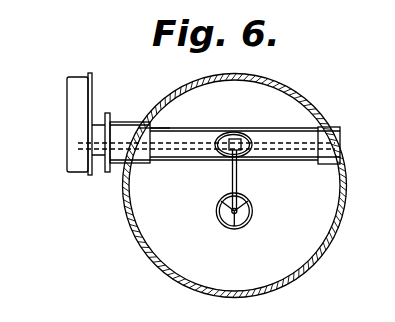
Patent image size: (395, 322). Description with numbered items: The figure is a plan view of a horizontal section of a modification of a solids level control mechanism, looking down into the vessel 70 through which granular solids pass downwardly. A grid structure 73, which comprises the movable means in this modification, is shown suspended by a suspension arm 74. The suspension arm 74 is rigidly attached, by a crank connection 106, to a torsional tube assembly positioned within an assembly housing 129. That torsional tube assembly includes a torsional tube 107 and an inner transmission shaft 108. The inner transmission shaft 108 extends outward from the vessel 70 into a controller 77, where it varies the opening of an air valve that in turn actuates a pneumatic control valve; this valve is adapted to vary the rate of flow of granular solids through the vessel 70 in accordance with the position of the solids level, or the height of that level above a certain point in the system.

The vessel 70 is at (311, 102).
The controller 77 is at (72, 80).
The torsional tube 107 is at (167, 161).
The inner transmission shaft 108 is at (193, 149).
The assembly housing 129 is at (159, 126).
The crank connection 106 is at (235, 140).
The suspension arm 74 is at (238, 178).
The grid structure 73 is at (253, 216).